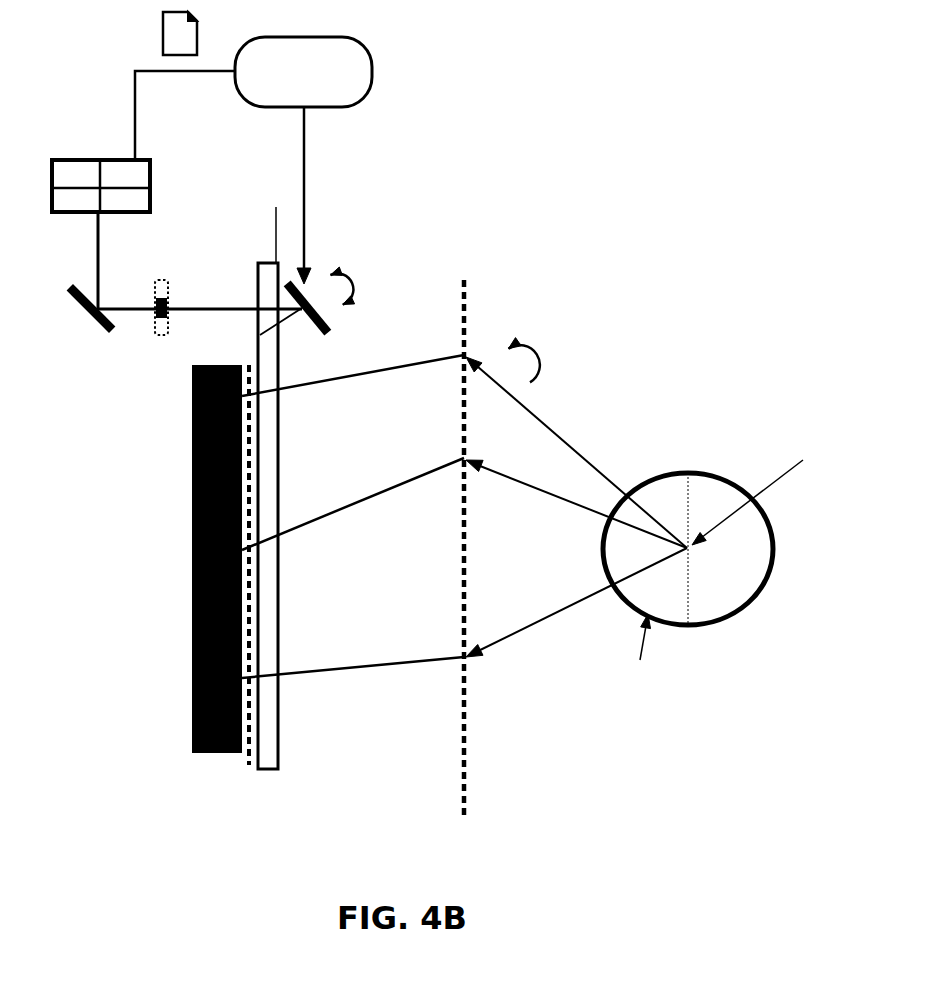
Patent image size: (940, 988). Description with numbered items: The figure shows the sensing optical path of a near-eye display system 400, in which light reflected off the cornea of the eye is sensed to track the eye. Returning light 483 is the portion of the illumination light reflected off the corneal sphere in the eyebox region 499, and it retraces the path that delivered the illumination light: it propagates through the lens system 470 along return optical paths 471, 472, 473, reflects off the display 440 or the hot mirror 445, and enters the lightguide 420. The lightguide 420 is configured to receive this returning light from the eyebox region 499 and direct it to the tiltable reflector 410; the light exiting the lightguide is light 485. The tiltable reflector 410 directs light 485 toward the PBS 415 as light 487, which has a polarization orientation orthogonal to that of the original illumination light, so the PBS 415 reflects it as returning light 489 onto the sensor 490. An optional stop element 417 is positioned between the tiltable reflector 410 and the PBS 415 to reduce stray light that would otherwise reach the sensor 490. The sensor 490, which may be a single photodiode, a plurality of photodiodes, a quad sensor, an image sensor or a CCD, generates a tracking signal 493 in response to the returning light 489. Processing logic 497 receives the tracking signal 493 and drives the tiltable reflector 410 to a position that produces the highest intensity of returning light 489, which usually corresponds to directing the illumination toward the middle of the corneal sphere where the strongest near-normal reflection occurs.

The near-eye display system 400 is at (937, 63).
The tracking signal 493 is at (163, 26).
The processing logic 497 is at (347, 81).
The sensor 490 is at (52, 160).
The returning light 489 is at (96, 262).
The PBS 415 is at (100, 326).
The stop element 417 is at (163, 280).
The light 487 is at (210, 309).
The lightguide 420 is at (276, 207).
The tiltable reflector 410 is at (330, 323).
The light 485 is at (282, 324).
The display 440 is at (192, 753).
The hot mirror 445 is at (249, 765).
The lens system 470 is at (464, 280).
The returning light 483 is at (530, 338).
The return optical path 471 is at (385, 377).
The return optical path 472 is at (420, 480).
The return optical path 473 is at (417, 670).
The eyebox region 499 is at (690, 472).